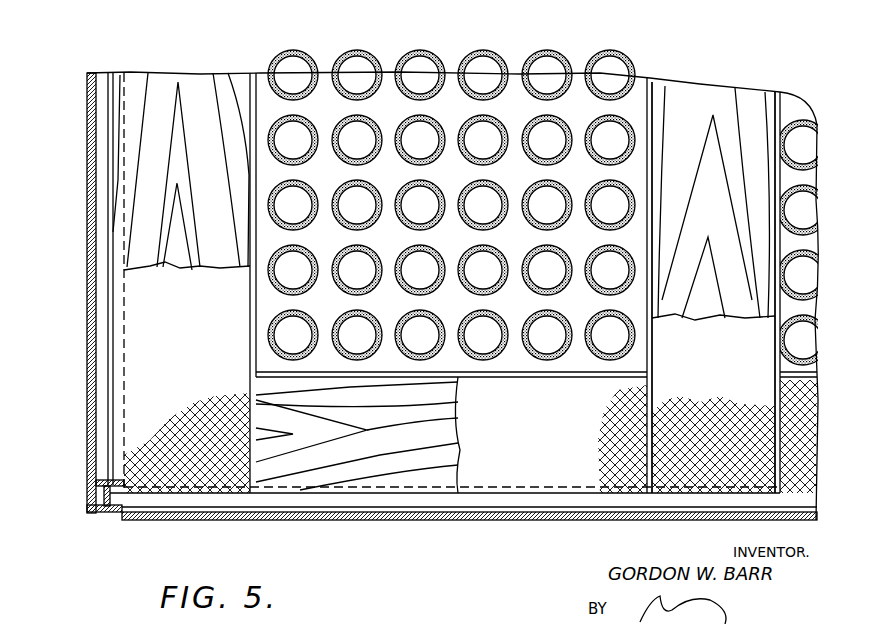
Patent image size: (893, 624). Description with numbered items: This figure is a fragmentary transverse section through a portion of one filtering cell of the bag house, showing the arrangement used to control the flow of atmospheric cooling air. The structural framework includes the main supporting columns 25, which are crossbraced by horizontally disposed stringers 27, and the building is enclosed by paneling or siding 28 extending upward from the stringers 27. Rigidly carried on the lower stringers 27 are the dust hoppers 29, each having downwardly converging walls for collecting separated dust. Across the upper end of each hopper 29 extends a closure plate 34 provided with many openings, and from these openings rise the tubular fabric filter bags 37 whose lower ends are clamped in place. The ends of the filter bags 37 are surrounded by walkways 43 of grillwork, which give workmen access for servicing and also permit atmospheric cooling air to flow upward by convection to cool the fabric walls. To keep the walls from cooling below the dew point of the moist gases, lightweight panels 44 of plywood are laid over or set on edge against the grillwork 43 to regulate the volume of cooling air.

The main supporting columns 25 is at (97, 520).
The stringers 27 is at (97, 442).
The paneling or siding 28 is at (88, 338).
The dust hoppers 29 is at (772, 222).
The closure plate 34 is at (636, 88).
The fabric filter bag 37 is at (599, 73).
The walkways of grillwork 43 is at (182, 402).
The lightweight panels 44 is at (210, 257).